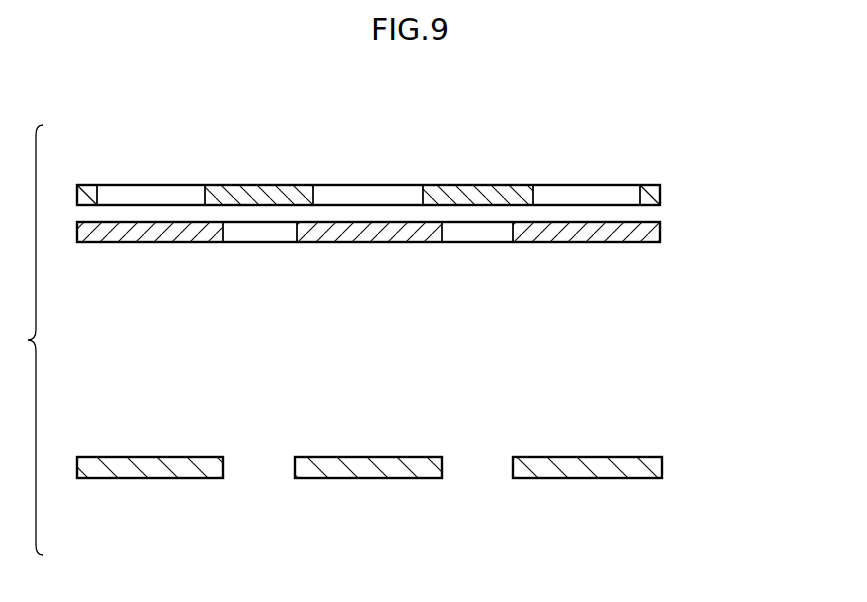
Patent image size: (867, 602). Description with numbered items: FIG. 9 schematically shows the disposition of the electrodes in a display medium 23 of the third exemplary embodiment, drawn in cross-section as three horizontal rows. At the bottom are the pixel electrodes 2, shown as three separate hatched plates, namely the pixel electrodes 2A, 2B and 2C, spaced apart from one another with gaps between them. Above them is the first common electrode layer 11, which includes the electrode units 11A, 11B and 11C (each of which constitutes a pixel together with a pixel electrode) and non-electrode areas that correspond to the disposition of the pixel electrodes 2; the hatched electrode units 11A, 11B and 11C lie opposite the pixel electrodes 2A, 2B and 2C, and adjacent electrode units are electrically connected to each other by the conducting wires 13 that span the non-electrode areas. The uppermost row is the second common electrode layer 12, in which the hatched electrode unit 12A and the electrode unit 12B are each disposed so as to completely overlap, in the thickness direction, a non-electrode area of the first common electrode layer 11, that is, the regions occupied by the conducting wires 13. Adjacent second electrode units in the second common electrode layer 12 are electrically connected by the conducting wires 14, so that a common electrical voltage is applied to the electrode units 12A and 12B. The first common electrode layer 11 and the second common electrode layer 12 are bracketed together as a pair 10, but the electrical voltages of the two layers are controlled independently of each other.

The display medium 23 is at (673, 93).
The wiring sheet 10 is at (767, 157).
The second common electrode layer 12 is at (664, 193).
The conducting wires 14 is at (155, 184).
The electrode unit 12A is at (262, 184).
The electrode unit 12B is at (480, 184).
The first common electrode layer 11 is at (664, 231).
The electrode unit 11A is at (152, 243).
The electrode unit 11B is at (366, 243).
The electrode unit 11C is at (586, 243).
The conducting wires 13 is at (258, 243).
The pixel electrodes 2 is at (664, 467).
The pixel electrode 2A is at (150, 479).
The pixel electrode 2B is at (366, 479).
The pixel electrode 2C is at (585, 479).